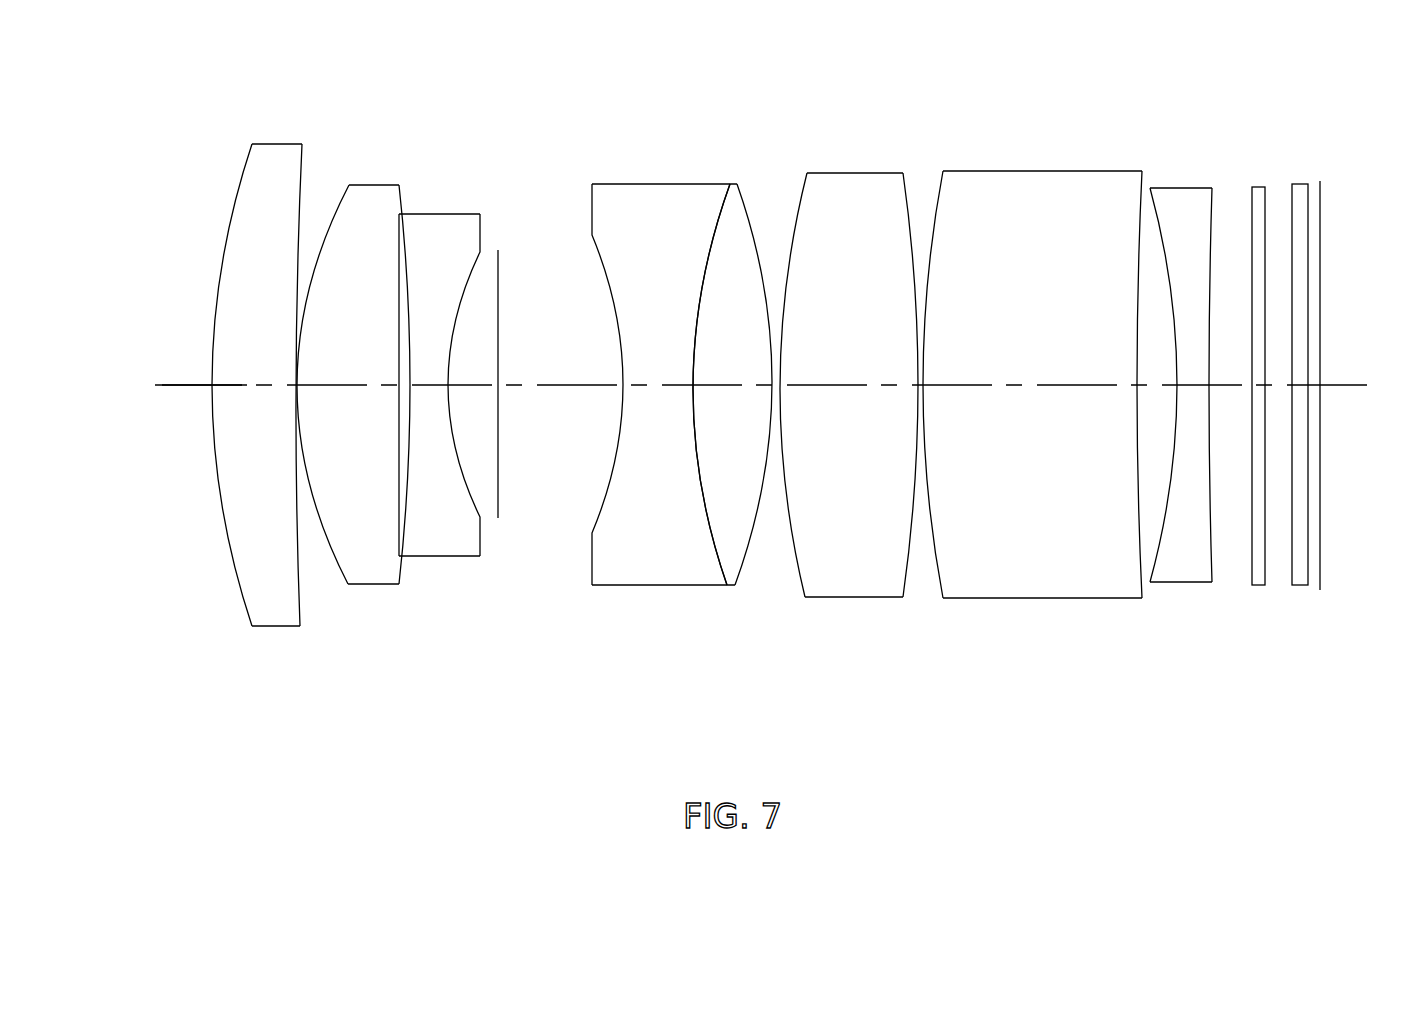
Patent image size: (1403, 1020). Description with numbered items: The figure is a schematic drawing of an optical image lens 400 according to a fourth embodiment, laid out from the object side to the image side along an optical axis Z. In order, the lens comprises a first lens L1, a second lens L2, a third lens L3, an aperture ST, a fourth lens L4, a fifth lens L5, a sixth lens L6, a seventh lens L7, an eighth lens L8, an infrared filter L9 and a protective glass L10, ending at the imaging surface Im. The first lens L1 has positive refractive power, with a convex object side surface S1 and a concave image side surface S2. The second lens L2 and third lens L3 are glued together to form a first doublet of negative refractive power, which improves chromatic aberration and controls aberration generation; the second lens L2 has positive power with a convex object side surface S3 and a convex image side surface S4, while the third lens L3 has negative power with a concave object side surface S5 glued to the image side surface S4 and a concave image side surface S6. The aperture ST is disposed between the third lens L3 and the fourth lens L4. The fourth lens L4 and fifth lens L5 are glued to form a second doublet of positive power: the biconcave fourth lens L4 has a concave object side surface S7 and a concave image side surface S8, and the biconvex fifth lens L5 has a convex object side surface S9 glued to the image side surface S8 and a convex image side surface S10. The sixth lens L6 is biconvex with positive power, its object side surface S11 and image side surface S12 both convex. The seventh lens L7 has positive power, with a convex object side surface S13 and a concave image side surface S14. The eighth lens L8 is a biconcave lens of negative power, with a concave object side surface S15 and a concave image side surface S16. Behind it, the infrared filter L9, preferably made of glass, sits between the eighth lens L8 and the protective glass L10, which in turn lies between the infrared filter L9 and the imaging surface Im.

The optical image lens 400 is at (226, 152).
The optical axis Z is at (751, 388).
The first lens L1 is at (254, 386).
The second lens L2 is at (360, 407).
The third lens L3 is at (461, 411).
The aperture ST is at (496, 280).
The fourth lens L4 is at (634, 381).
The fifth lens L5 is at (721, 402).
The sixth lens L6 is at (849, 413).
The seventh lens L7 is at (1032, 388).
The eighth lens L8 is at (1230, 390).
The infrared filter L9 is at (1258, 195).
The protective glass L10 is at (1305, 195).
The imaging surface Im is at (1321, 245).
The object side surface of the first lens S1 is at (240, 588).
The image side surface of the first lens S2 is at (302, 600).
The object side surface of the second lens S3 is at (333, 556).
The image side surface of the second lens S4 is at (392, 567).
The object side surface of the third lens S5 is at (400, 527).
The image side surface of the third lens S6 is at (467, 487).
The object side surface of the fourth lens S7 is at (610, 487).
The image side surface of the fourth lens S8 is at (612, 485).
The object side surface of the fifth lens S9 is at (717, 570).
The image side surface of the fifth lens S10 is at (747, 558).
The object side surface of the sixth lens S11 is at (798, 565).
The image side surface of the sixth lens S12 is at (908, 568).
The object side surface of the seventh lens S13 is at (927, 557).
The image side surface of the seventh lens S14 is at (1140, 523).
The object side surface of the eighth lens S15 is at (1163, 525).
The image side surface of the eighth lens S16 is at (1213, 545).